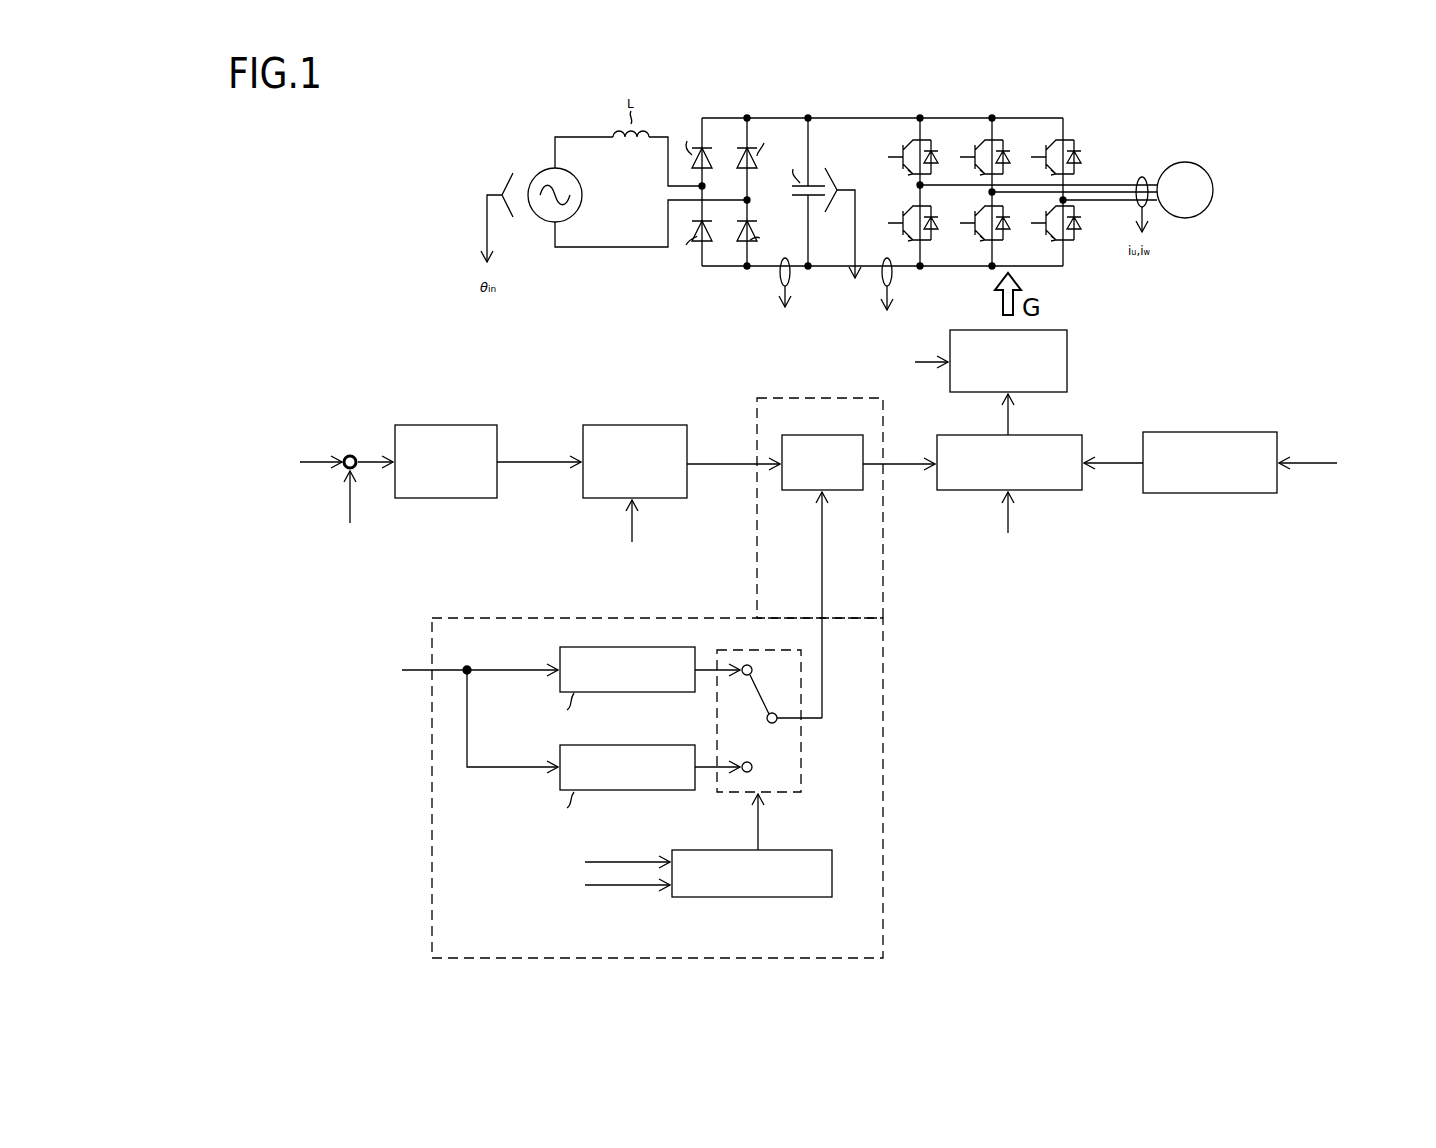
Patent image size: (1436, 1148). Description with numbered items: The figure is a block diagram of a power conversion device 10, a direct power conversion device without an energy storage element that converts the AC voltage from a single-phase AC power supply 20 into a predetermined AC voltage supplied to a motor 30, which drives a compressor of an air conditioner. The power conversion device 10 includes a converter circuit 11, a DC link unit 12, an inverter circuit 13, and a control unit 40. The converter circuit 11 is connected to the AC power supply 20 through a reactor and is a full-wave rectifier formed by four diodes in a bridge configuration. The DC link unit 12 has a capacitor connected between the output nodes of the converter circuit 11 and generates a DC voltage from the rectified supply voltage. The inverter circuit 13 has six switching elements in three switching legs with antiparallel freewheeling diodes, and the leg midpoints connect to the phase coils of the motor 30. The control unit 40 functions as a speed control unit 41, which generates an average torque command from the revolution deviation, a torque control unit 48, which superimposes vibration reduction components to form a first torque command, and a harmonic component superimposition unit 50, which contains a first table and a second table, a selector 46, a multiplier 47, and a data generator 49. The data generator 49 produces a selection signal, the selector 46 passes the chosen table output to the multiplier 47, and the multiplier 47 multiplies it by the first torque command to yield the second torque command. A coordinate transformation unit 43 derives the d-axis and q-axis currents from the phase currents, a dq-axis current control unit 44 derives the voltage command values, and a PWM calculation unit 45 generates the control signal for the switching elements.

The power conversion device 10 is at (884, 82).
The converter circuit 11 is at (752, 112).
The DC link unit 12 is at (838, 112).
The inverter circuit 13 is at (1021, 112).
The AC power supply 20 is at (583, 193).
The motor 30 is at (1213, 187).
The control unit 40 is at (1200, 376).
The speed control unit 41 is at (445, 423).
The coordinate transformation unit 43 is at (1205, 496).
The dq-axis current control unit 44 is at (1053, 492).
The PWM calculation unit 45 is at (1070, 356).
The selector 46 is at (802, 753).
The multiplier 47 is at (789, 491).
The torque control unit 48 is at (633, 423).
The data generator 49 is at (813, 897).
The harmonic component superimposition unit 50 is at (883, 873).